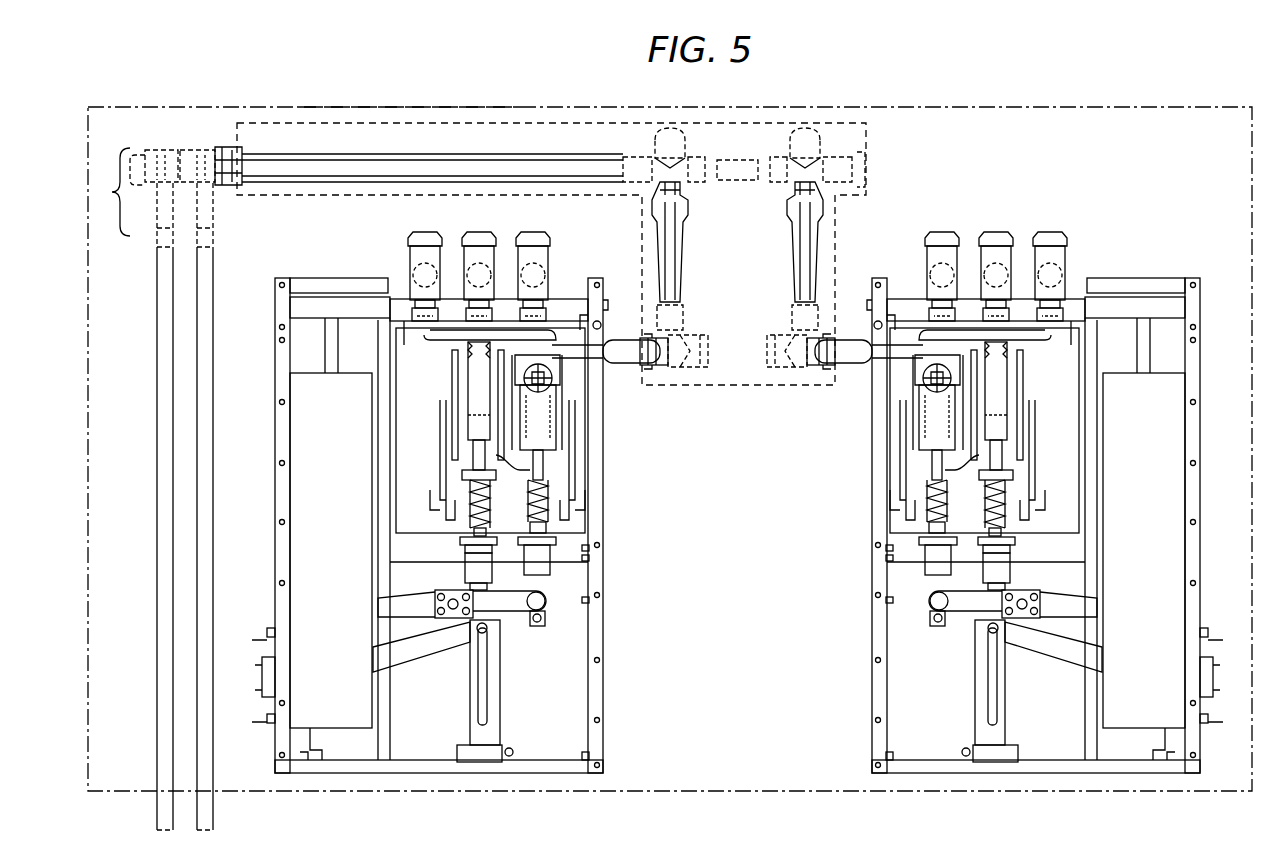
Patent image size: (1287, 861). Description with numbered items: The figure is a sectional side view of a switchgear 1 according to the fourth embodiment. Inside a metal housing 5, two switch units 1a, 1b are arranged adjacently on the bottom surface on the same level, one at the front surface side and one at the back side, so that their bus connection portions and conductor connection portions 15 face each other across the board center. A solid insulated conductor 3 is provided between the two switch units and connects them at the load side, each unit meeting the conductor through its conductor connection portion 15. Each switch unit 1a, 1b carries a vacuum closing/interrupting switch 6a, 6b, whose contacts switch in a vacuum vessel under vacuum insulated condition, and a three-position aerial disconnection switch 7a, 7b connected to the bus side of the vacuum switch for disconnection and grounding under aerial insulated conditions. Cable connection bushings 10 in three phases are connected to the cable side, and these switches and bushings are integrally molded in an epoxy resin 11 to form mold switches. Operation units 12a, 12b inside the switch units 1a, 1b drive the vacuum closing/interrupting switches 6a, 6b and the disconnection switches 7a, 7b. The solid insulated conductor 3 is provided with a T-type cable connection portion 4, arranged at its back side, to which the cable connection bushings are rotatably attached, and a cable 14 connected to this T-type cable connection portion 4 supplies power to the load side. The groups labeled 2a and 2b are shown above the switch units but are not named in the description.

The switchgear 1 is at (402, 107).
The metal housing 5 is at (990, 107).
The solid insulated conductor 3 is at (868, 157).
The T-type cable connection portion 4 is at (358, 191).
The cable 14 is at (157, 598).
The switch unit 1a is at (345, 278).
The switch unit 1b is at (1140, 278).
The first bottle group 2a is at (555, 226).
The second bottle group 2b is at (920, 226).
The three-position aerial disconnection switch 7a is at (464, 352).
The three-position aerial disconnection switch 7b is at (1011, 352).
The vacuum closing/interrupting switch 6a is at (565, 425).
The vacuum closing/interrupting switch 6b is at (910, 425).
The epoxy resin 11 is at (445, 430).
The operation unit 12a is at (300, 431).
The operation unit 12b is at (1178, 431).
The cable connection bushing 10 is at (613, 368).
The conductor connection portion 15 is at (637, 370).